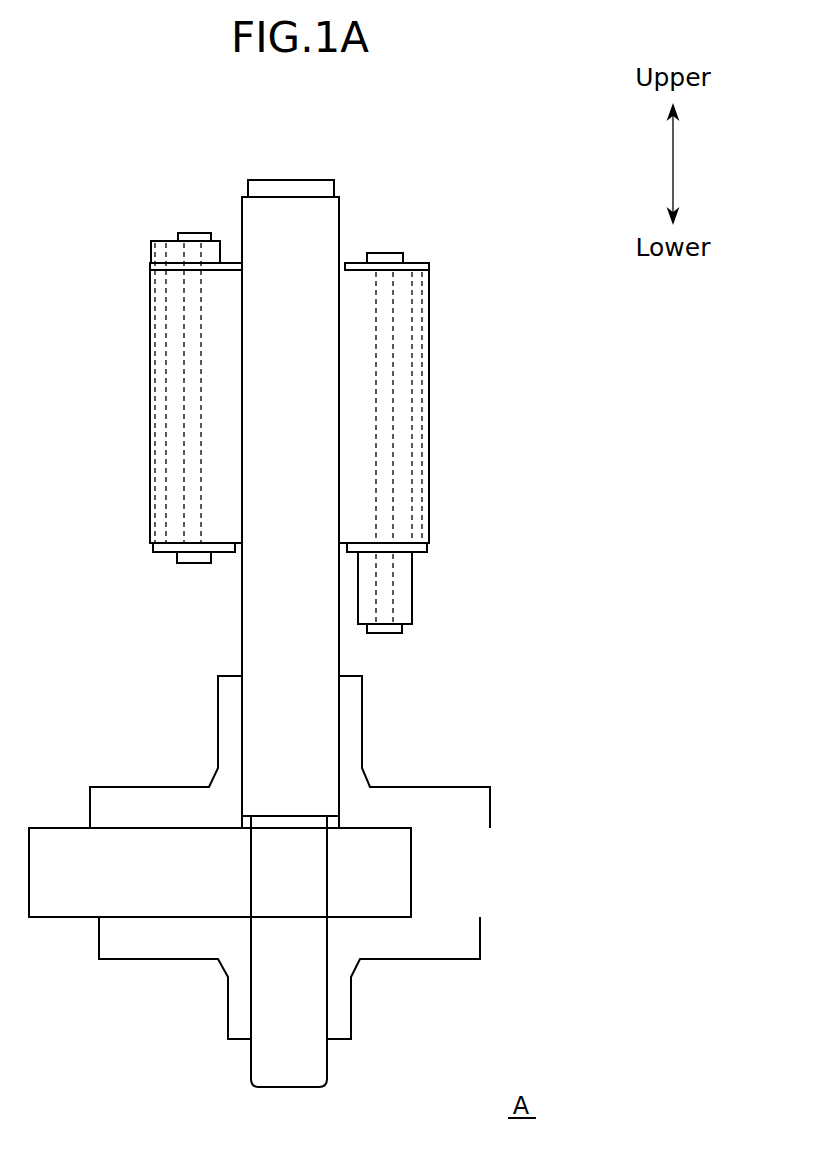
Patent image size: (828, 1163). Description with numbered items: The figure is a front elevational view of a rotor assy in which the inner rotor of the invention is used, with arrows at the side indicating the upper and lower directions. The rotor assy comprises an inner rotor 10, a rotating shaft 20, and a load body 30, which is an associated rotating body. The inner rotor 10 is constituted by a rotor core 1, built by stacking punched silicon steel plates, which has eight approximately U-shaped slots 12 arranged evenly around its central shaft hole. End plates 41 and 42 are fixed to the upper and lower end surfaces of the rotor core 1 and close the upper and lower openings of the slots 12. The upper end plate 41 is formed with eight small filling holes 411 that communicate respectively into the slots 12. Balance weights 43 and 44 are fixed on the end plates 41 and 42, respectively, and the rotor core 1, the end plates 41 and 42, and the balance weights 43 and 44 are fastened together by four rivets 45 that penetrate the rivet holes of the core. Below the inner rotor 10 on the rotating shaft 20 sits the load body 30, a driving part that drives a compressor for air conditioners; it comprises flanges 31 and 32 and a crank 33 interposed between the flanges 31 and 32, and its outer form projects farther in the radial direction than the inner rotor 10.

The rotor core 1 is at (424, 398).
The inner rotor 10 is at (450, 398).
The slot 12 is at (427, 403).
The rotating shaft 20 is at (313, 170).
The load body 30 is at (321, 857).
The flange 31 is at (483, 798).
The flange 32 is at (327, 978).
The crank 33 is at (410, 874).
The end plate 41 is at (430, 265).
The filling hole 411 is at (419, 262).
The end plate 42 is at (423, 550).
The balance weight 43 is at (432, 592).
The balance weight 44 is at (175, 248).
The rivet 45 is at (193, 236).